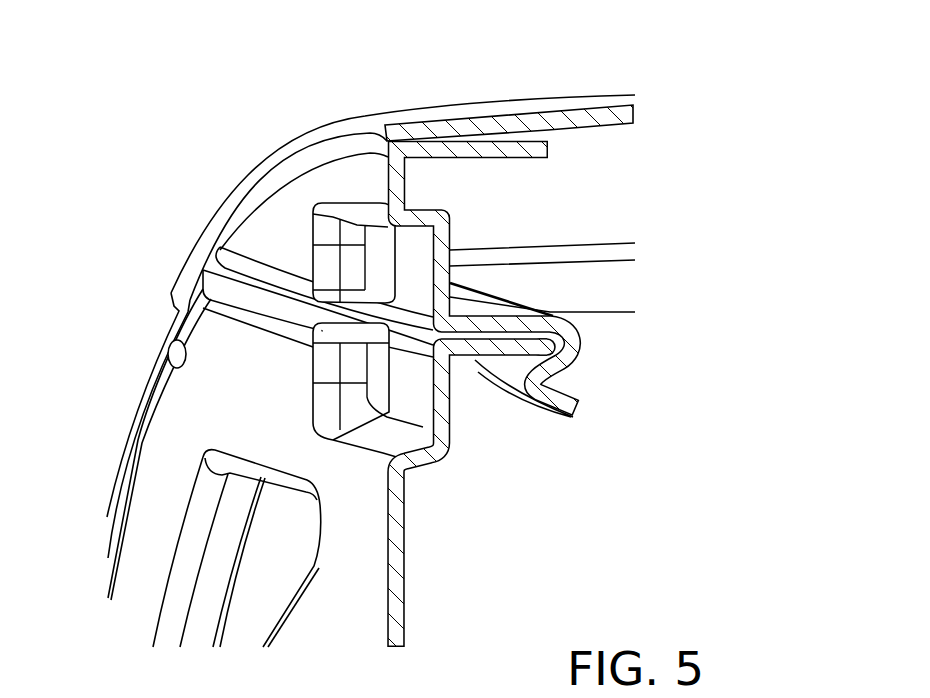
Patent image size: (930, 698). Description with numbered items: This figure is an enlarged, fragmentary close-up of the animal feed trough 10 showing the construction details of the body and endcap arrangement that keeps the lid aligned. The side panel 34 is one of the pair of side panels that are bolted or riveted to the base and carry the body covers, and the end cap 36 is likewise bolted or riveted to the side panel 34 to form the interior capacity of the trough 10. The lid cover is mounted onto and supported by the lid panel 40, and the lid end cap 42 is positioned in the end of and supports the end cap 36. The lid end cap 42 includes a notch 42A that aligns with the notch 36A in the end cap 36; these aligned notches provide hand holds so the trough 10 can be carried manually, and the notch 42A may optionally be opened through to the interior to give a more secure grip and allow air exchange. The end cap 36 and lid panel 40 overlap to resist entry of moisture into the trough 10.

The animal feed trough 10 is at (170, 135).
The side panel 34 is at (163, 333).
The end cap 36 is at (205, 398).
The notch 36A is at (372, 437).
The lid panel 40 is at (505, 124).
The lid end cap 42 is at (278, 220).
The notch 42A is at (372, 225).